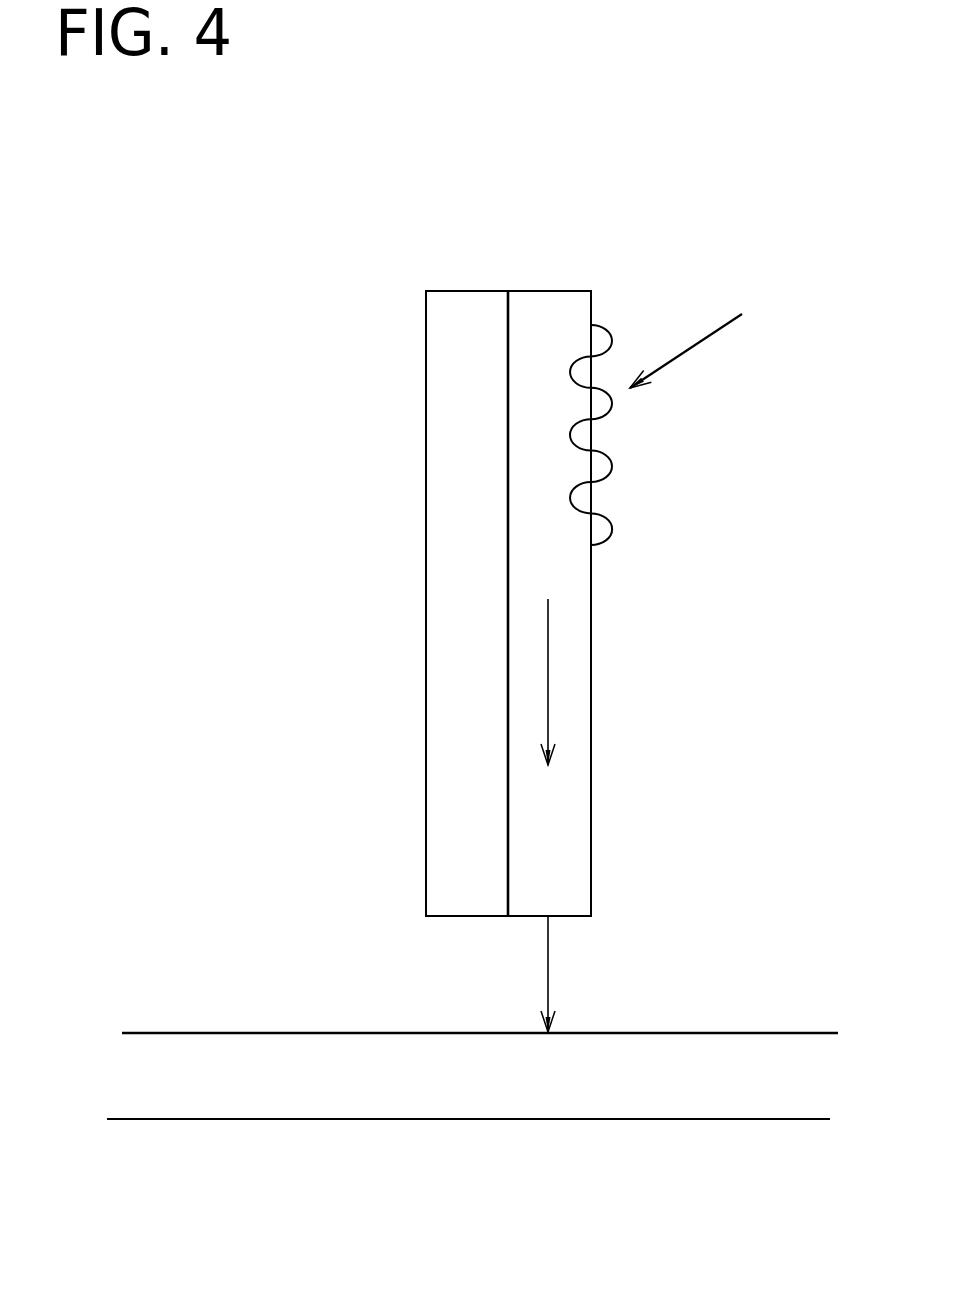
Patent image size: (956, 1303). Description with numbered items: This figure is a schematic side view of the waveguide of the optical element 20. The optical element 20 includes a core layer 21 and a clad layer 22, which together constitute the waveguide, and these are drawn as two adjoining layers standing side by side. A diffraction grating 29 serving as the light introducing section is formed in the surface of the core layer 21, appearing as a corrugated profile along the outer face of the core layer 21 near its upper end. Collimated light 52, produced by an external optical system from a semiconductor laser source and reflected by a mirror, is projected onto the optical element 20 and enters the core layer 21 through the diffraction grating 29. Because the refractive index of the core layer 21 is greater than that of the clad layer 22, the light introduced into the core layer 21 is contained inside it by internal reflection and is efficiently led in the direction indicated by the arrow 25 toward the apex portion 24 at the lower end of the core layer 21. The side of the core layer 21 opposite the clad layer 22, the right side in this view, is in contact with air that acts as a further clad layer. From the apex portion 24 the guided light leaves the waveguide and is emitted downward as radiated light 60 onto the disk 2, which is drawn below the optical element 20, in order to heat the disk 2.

The optical element 20 is at (370, 310).
The clad layer 22 is at (452, 527).
The core layer 21 is at (570, 594).
The diffraction grating 29 is at (612, 461).
The arrow 25 is at (548, 684).
The apex portion 24 is at (572, 918).
The radiated light 60 is at (548, 985).
The collimated light 52 is at (687, 350).
The disk 2 is at (612, 1097).